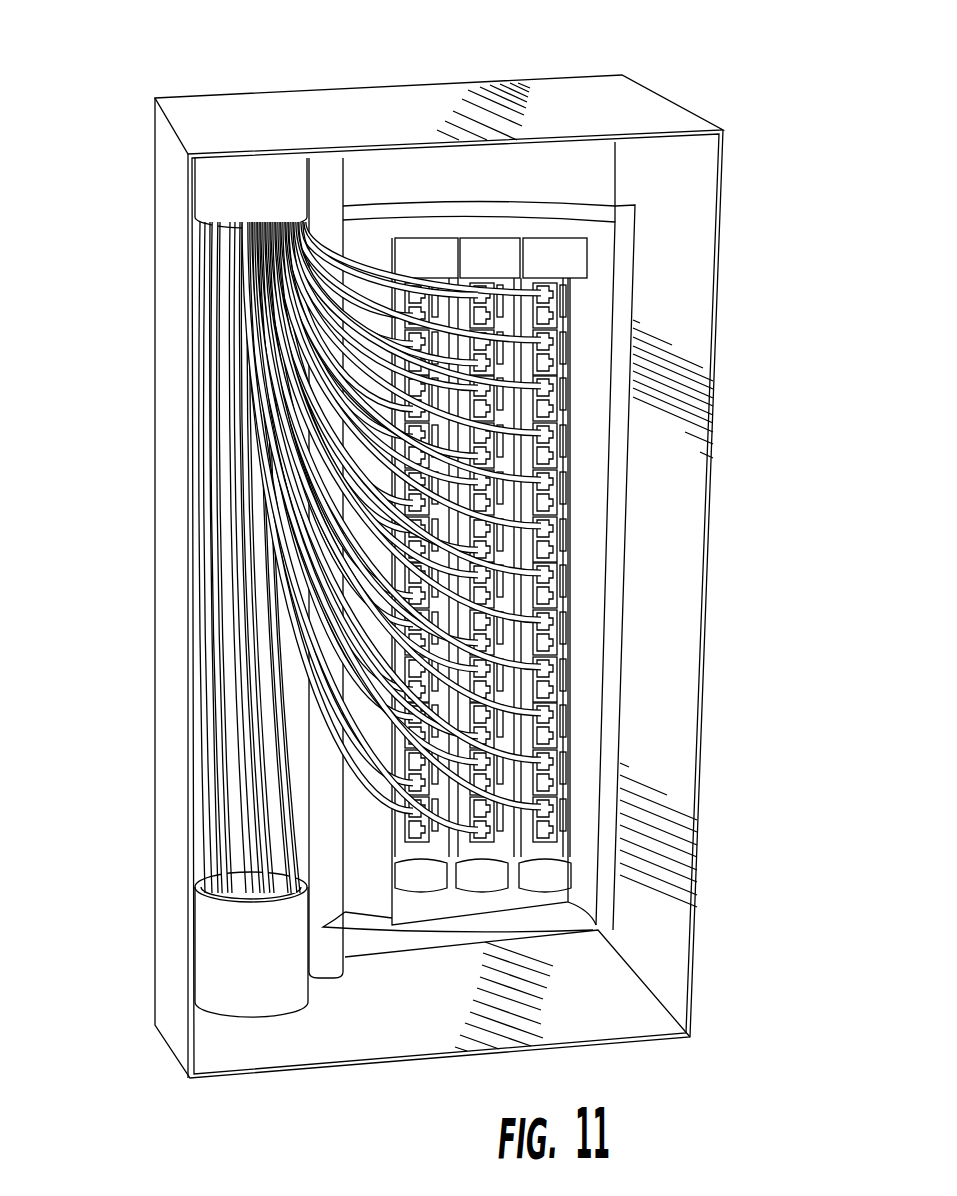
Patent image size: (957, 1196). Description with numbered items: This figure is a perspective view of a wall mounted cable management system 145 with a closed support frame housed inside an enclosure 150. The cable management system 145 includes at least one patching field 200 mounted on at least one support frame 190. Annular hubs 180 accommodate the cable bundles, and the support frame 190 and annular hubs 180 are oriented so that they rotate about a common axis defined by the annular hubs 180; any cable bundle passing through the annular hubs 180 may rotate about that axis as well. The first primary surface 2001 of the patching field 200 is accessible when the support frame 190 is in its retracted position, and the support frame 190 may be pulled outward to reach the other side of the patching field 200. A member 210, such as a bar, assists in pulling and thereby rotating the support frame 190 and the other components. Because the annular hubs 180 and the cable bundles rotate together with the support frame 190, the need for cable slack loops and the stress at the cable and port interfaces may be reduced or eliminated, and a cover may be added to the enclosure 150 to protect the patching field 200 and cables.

The cable management system 145 is at (454, 52).
The enclosure 150 is at (667, 830).
The annular hubs 180 is at (245, 963).
The support frame 190 is at (328, 868).
The patching field 200 is at (570, 713).
The first primary surface 2001 is at (508, 773).
The member 210 is at (608, 657).